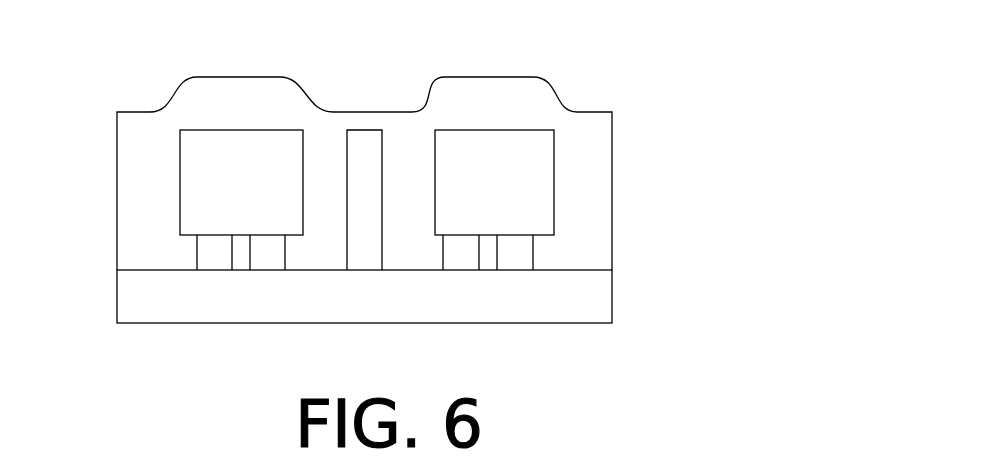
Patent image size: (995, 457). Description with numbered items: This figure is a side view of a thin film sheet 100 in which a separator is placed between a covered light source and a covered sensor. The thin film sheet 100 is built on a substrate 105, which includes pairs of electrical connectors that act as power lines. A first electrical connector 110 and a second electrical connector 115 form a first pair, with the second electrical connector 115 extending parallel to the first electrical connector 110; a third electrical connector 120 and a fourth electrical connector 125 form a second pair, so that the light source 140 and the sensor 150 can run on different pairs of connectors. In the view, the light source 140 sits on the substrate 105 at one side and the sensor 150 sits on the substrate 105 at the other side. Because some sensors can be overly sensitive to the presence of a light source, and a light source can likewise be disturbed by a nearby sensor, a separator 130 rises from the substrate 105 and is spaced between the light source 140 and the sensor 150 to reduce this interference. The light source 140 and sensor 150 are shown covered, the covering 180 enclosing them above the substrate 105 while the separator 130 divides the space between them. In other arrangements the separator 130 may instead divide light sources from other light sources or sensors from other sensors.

The thin film sheet 100 is at (610, 87).
The substrate 105 is at (116, 293).
The first electrical connector 110 is at (197, 252).
The second electrical connector 115 is at (285, 252).
The third electrical connector 120 is at (443, 252).
The fourth electrical connector 125 is at (534, 252).
The separator 130 is at (382, 157).
The light source 140 is at (180, 200).
The sensor 150 is at (554, 178).
The housing cover 180 is at (117, 165).